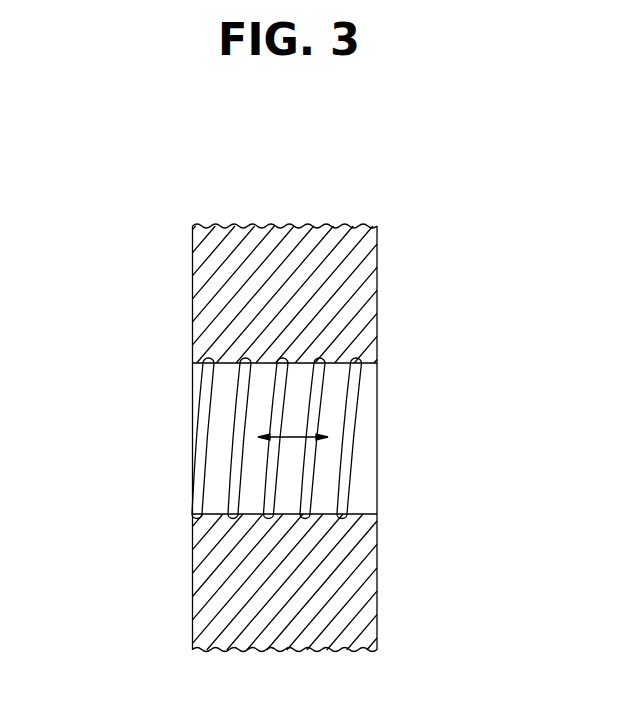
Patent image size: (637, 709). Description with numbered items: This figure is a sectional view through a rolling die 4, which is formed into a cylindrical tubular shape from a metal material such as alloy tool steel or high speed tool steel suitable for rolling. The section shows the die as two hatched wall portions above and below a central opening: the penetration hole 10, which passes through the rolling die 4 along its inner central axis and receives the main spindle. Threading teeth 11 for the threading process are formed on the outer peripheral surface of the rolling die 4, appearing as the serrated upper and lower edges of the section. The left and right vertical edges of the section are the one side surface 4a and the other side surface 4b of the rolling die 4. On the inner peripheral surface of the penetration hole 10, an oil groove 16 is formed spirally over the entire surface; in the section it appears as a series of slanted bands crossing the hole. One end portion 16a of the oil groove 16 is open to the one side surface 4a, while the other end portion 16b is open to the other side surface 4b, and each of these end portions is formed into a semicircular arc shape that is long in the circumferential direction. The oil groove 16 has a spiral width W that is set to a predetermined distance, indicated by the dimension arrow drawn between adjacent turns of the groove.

The rolling die 4 is at (180, 251).
The threading teeth 11 is at (224, 228).
The one side surface 4a is at (192, 318).
The other side surface 4b is at (377, 292).
The penetration hole 10 is at (332, 403).
The oil groove 16 is at (238, 465).
The one end portion 16a is at (192, 483).
The other end portion 16b is at (377, 507).
The spiral width W is at (328, 437).